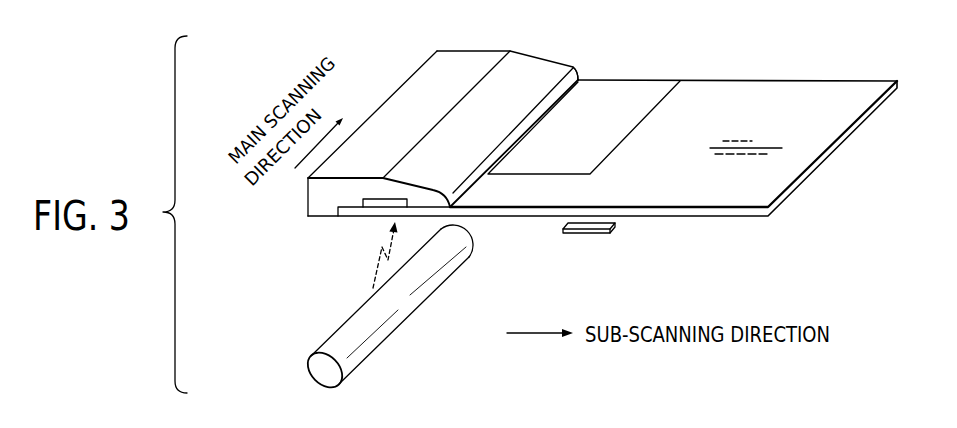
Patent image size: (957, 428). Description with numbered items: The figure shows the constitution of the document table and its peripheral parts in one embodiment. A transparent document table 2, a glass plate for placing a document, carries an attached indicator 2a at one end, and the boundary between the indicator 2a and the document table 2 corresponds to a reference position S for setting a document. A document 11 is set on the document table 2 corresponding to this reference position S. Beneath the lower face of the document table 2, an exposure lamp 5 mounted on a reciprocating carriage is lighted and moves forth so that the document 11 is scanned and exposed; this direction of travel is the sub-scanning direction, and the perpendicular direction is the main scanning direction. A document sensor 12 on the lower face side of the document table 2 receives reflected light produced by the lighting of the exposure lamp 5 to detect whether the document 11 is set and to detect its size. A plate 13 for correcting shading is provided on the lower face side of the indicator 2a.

The document table 2 is at (802, 85).
The indicator 2a is at (545, 65).
The reference position S is at (575, 52).
The document 11 is at (638, 83).
The document sensor 12 is at (615, 225).
The plate for correcting shading 13 is at (368, 210).
The exposure lamp 5 is at (450, 267).